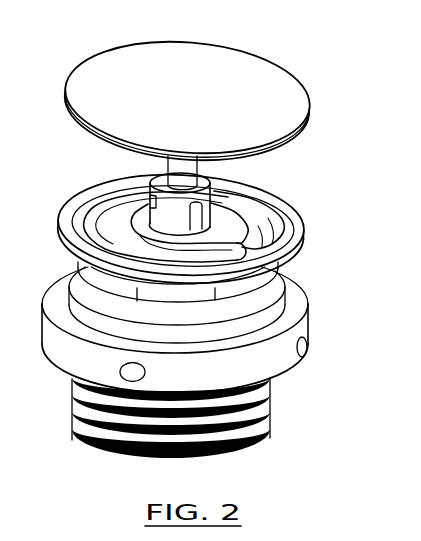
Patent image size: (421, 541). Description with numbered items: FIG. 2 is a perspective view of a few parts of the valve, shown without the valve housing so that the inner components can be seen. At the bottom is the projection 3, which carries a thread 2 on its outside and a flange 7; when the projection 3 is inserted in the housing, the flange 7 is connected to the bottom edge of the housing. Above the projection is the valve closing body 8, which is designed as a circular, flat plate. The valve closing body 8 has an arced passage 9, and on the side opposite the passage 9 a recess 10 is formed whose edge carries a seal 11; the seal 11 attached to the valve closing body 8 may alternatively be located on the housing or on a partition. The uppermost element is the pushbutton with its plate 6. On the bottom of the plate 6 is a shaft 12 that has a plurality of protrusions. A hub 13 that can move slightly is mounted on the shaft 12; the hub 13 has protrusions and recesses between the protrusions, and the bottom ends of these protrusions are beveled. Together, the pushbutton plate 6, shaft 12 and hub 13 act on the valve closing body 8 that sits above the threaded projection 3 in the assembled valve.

The thread 2 is at (85, 419).
The projection 3 is at (186, 360).
The plate 6 is at (252, 68).
The flange 7 is at (297, 314).
The valve closing body 8 is at (288, 243).
The arced passage 9 is at (254, 233).
The recess 10 is at (117, 222).
The seal 11 is at (88, 200).
The shaft 12 is at (171, 169).
The hub 13 is at (213, 183).